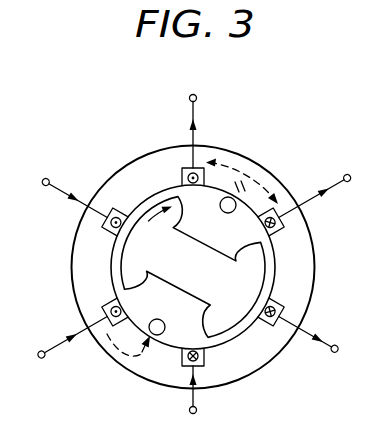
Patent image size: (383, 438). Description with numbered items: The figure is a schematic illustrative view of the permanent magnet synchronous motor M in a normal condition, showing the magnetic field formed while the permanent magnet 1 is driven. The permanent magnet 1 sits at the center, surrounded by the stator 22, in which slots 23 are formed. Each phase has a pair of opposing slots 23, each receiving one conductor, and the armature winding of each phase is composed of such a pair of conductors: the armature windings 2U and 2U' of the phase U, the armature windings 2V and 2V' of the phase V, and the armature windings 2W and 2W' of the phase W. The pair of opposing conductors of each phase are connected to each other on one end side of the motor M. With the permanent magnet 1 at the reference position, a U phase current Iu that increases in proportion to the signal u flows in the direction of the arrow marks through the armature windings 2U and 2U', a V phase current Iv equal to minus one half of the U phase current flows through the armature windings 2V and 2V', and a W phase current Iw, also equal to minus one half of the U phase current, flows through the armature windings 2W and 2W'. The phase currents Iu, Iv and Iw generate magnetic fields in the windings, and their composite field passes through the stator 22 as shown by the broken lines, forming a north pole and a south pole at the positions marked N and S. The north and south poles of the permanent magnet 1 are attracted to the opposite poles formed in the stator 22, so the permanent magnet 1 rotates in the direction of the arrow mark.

The permanent magnet 1 is at (258, 277).
The stator 22 is at (134, 170).
The slot 23 is at (184, 168).
The armature winding of the phase U 2U is at (310, 299).
The armature winding of the phase U 2U' is at (72, 234).
The armature winding of the phase V 2V is at (71, 310).
The armature winding of the phase V 2V' is at (314, 228).
The armature winding of the phase W 2W is at (250, 132).
The armature winding of the phase W 2W' is at (250, 373).
The permanent magnet synchronous motor M is at (301, 157).
The U phase current Iu is at (330, 313).
The V phase current Iv is at (326, 186).
The W phase current Iw is at (199, 135).